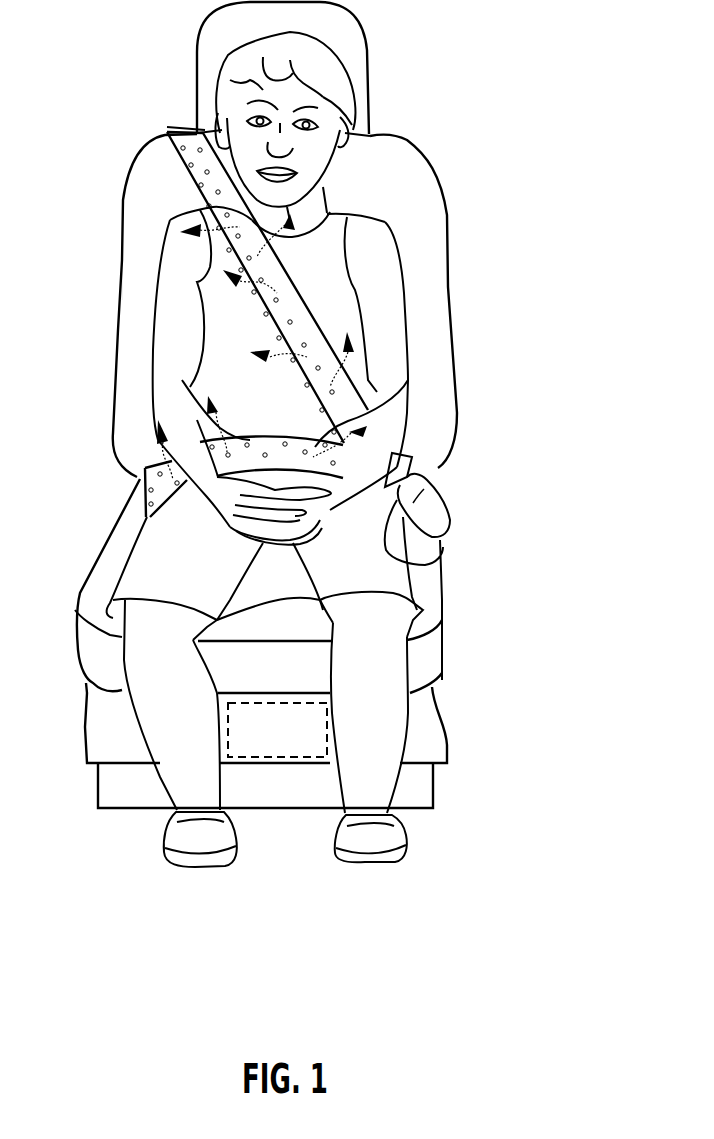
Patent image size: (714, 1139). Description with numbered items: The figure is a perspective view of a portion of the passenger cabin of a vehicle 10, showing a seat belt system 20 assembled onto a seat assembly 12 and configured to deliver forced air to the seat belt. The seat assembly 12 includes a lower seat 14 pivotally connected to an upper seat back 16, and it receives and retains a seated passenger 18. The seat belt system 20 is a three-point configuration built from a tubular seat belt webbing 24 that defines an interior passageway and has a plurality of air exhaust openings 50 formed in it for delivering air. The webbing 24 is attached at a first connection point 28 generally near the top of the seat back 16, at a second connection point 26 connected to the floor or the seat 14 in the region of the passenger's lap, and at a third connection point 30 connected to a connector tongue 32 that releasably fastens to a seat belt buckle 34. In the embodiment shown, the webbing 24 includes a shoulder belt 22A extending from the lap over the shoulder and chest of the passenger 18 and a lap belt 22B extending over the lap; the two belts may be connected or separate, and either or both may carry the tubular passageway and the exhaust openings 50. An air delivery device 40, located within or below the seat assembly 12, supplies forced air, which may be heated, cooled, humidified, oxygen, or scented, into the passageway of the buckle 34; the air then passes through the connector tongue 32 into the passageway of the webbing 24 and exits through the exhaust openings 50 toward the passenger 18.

The vehicle 10 is at (452, 82).
The seat assembly 12 is at (437, 164).
The lower seat 14 is at (103, 577).
The upper seat back 16 is at (147, 200).
The seated passenger 18 is at (173, 317).
The seat belt system 20 is at (459, 543).
The shoulder belt 22A is at (195, 163).
The lap belt 22B is at (140, 476).
The tubular seat belt webbing 24 is at (167, 127).
The second connection point 26 is at (144, 502).
The first connection point 28 is at (193, 130).
The third connection point 30 is at (413, 470).
The connector tongue 32 is at (428, 573).
The seat belt buckle 34 is at (425, 513).
The air delivery device 40 is at (227, 715).
The air exhaust openings 50 is at (290, 440).